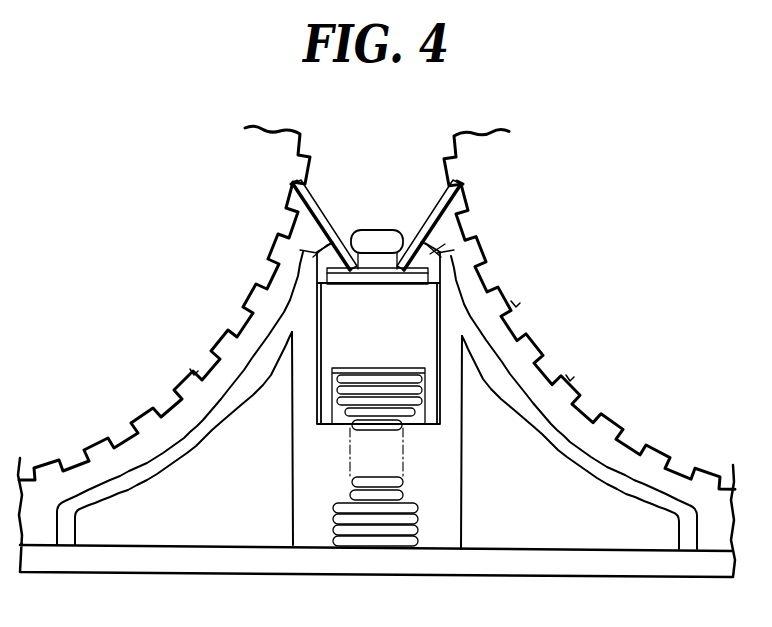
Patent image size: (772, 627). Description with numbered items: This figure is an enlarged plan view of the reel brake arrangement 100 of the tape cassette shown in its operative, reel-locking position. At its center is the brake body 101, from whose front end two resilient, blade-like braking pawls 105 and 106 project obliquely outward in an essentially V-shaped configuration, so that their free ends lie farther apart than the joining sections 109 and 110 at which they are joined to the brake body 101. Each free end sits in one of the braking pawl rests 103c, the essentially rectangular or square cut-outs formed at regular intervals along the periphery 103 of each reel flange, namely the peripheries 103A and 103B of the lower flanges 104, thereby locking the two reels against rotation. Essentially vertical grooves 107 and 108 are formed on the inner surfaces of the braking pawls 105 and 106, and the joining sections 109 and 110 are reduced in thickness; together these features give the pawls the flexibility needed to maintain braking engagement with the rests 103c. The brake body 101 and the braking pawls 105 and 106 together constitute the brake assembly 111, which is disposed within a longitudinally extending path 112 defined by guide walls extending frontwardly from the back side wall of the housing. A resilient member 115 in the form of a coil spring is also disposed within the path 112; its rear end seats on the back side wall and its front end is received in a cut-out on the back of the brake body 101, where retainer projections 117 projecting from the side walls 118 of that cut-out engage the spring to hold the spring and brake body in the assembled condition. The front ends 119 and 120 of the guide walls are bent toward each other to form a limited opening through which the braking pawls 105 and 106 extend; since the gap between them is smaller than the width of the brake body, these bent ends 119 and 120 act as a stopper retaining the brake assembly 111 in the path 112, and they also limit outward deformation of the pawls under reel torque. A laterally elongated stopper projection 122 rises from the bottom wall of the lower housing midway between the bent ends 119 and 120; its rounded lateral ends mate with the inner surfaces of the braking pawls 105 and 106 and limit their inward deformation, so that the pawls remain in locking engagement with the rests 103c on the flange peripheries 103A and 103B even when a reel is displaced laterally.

The reel brake arrangement 100 is at (424, 153).
The brake body 101 is at (330, 358).
The cover 103 is at (456, 452).
The periphery of lower flange 103A is at (636, 437).
The periphery of lower flange 103B is at (122, 430).
The braking pawl rest 103c is at (193, 371).
The inner wall 104 is at (292, 526).
The braking pawl 105 is at (461, 192).
The braking pawl 106 is at (294, 185).
The vertical groove 107 is at (423, 223).
The vertical groove 108 is at (331, 223).
The joining section 109 is at (400, 271).
The joining section 110 is at (352, 271).
The brake assembly 111 is at (434, 252).
The longitudinally extending path 112 is at (327, 470).
The resilient member 115 is at (401, 487).
The retainer projection 117 is at (352, 402).
The side wall 118 is at (338, 384).
The bent front end of guide wall 119 is at (441, 253).
The bent front end of guide wall 120 is at (300, 250).
The stopper projection 122 is at (376, 229).